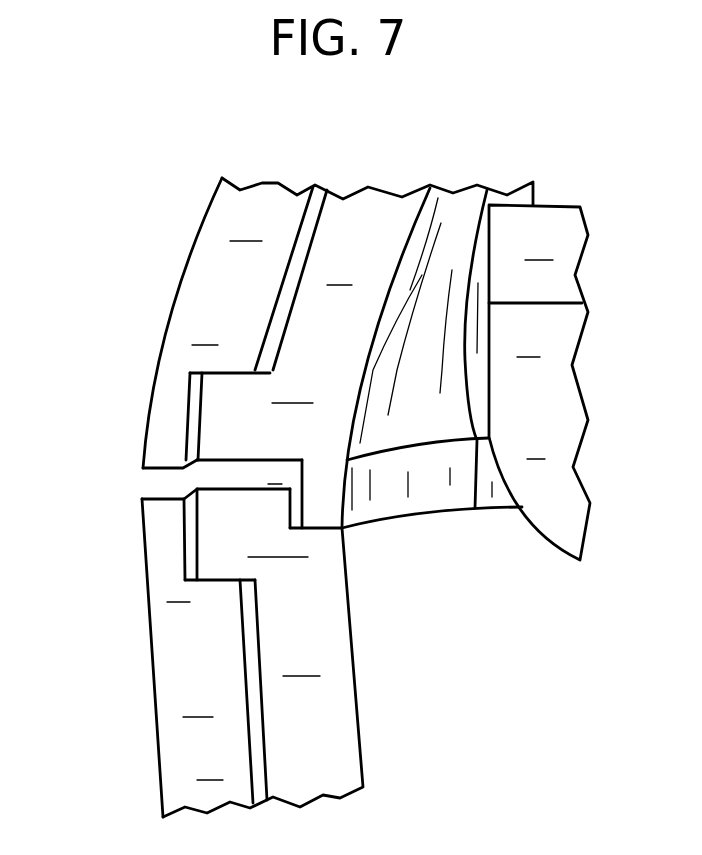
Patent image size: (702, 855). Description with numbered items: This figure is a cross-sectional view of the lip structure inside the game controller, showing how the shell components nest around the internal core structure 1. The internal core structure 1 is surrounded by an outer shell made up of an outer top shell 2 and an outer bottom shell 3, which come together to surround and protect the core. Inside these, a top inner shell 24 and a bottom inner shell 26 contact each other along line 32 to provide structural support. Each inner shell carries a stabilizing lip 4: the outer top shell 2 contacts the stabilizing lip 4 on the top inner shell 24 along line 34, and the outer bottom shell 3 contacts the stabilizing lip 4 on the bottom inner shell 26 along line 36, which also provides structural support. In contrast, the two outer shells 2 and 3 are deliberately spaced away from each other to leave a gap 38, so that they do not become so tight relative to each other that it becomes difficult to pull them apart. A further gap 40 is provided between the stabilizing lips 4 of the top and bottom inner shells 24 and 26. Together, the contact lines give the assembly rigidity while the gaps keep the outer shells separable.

The internal core structure 1 is at (357, 238).
The outer top shell 2 is at (233, 272).
The outer bottom shell 3 is at (200, 680).
The stabilizing lip 4 is at (267, 417).
The top inner shell 24 is at (305, 347).
The bottom inner shell 26 is at (285, 632).
The line 32 is at (323, 532).
The line 34 is at (220, 372).
The line 36 is at (201, 584).
The gap 38 is at (167, 478).
The gap 40 is at (252, 467).